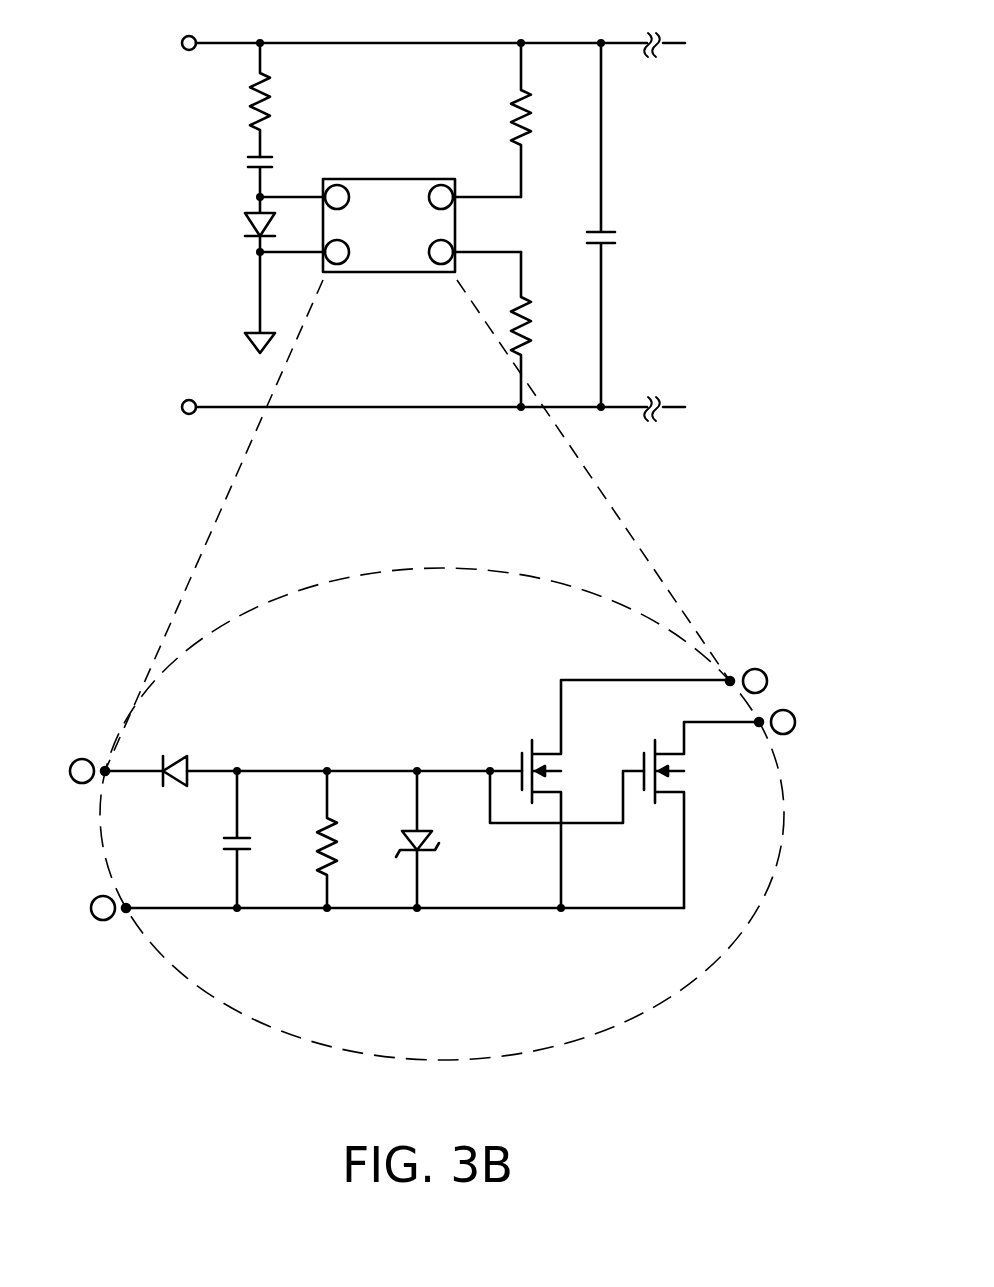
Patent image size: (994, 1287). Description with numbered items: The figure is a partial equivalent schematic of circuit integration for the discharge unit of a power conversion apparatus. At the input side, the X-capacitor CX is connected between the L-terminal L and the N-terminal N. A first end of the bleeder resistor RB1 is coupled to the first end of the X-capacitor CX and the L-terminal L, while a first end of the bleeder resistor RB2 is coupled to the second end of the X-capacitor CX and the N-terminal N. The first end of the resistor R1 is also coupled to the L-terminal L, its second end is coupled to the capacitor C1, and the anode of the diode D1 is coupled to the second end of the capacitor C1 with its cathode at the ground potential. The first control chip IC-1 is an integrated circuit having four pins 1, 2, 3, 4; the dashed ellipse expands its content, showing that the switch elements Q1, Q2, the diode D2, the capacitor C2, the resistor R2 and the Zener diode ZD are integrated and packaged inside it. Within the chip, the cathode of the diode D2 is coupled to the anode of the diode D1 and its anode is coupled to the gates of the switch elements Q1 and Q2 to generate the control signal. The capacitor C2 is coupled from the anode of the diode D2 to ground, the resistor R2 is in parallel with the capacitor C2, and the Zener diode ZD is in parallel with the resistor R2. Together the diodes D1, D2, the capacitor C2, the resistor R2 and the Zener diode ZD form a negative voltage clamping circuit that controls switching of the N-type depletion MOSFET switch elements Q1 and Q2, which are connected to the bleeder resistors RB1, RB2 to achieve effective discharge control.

The L-terminal L is at (422, 42).
The N-terminal N is at (422, 407).
The resistor R1 is at (243, 100).
The capacitor C1 is at (243, 169).
The diode D1 is at (244, 275).
The first control chip IC-1 is at (418, 242).
The pin 1 is at (209, 484).
The pin 2 is at (220, 580).
The pin 3 is at (598, 439).
The pin 4 is at (612, 487).
The bleeder resistor RB1 is at (546, 120).
The bleeder resistor RB2 is at (546, 329).
The X-capacitor CX is at (621, 225).
The diode D2 is at (176, 748).
The capacitor C2 is at (257, 839).
The resistor R2 is at (346, 839).
The Zener diode ZD is at (433, 839).
The switch element Q1 is at (610, 794).
The switch element Q2 is at (701, 815).